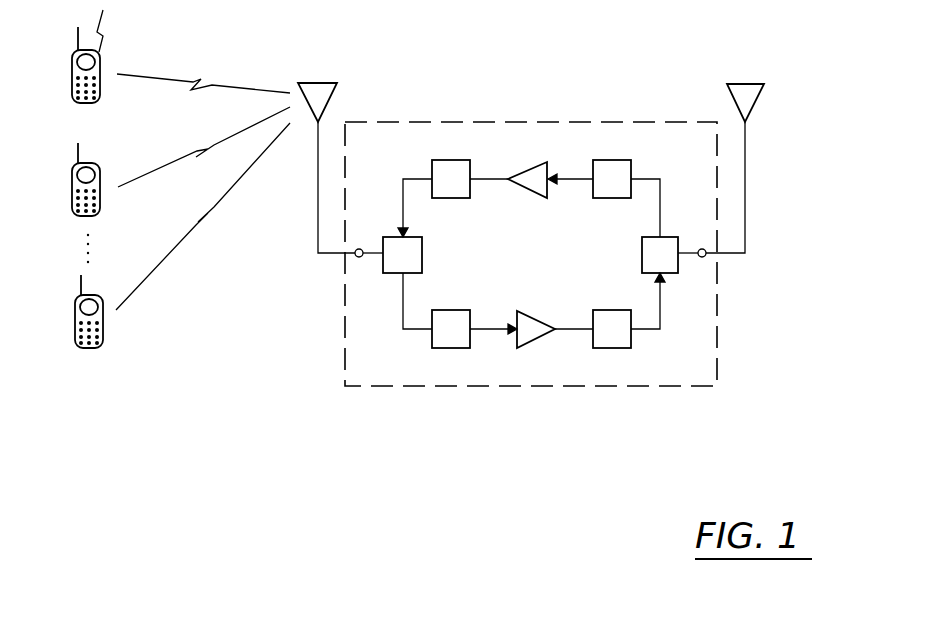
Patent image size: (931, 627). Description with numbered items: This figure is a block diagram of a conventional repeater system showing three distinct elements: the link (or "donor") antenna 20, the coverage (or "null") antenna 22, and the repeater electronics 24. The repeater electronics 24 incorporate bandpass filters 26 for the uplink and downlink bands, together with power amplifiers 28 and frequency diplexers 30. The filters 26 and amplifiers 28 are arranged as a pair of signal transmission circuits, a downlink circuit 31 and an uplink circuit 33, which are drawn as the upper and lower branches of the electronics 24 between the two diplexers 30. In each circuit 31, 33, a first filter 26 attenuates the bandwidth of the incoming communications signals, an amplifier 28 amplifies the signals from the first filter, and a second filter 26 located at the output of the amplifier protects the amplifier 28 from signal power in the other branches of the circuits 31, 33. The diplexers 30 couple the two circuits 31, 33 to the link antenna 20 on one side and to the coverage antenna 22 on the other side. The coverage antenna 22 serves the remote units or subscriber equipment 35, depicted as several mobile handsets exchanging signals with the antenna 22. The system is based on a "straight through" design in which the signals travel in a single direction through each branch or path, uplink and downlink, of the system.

The link antenna 20 is at (757, 101).
The coverage antenna 22 is at (335, 92).
The repeater electronics 24 is at (717, 365).
The bandpass filter 26 is at (458, 160).
The power amplifier 28 is at (531, 162).
The frequency diplexer 30 is at (422, 243).
The downlink signal transmission circuit 31 is at (680, 178).
The uplink signal transmission circuit 33 is at (680, 324).
The remote units 35 is at (73, 216).